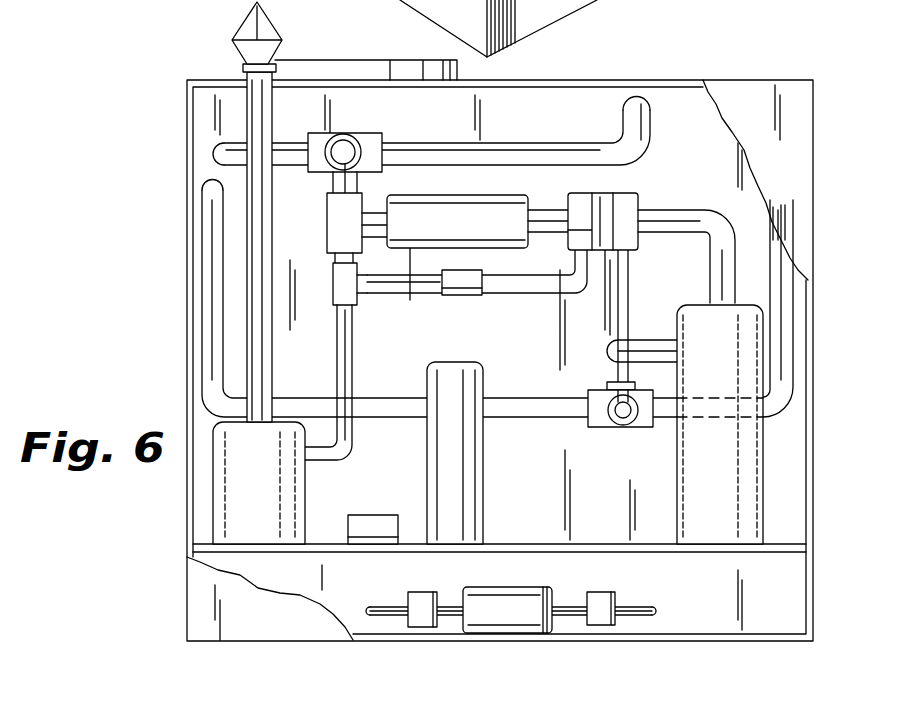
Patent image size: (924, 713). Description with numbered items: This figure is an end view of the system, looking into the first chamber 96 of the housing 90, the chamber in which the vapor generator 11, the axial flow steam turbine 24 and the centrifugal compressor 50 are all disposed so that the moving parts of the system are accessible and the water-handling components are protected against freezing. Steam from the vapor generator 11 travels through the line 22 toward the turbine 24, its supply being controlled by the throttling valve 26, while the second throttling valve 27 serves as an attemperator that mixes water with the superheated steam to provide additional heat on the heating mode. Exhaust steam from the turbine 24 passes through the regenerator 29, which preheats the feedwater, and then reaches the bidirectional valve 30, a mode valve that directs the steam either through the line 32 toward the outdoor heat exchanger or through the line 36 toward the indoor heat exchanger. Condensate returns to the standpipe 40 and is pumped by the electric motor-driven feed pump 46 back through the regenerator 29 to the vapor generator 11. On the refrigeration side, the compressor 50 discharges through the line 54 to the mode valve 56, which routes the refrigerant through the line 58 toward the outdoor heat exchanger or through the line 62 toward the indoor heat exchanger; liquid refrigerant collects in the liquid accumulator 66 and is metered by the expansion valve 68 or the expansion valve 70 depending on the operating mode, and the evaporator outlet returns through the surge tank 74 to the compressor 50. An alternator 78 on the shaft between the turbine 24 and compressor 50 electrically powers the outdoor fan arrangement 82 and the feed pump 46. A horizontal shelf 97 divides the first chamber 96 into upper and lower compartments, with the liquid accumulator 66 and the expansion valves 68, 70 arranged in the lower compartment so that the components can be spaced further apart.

The vapor generator 11 is at (270, 495).
The line 22 is at (345, 343).
The axial flow steam turbine 24 is at (580, 205).
The throttling valve 26 is at (465, 292).
The second throttling valve 27 is at (330, 230).
The regenerator 29 is at (463, 205).
The bidirectional valve 30 is at (370, 143).
The line 32 is at (285, 148).
The line 36 is at (545, 146).
The standpipe 40 is at (480, 470).
The feed pump 46 is at (366, 528).
The centrifugal compressor 50 is at (636, 206).
The line 54 is at (630, 302).
The mode valve 56 is at (600, 430).
The line 58 is at (206, 312).
The line 62 is at (783, 303).
The liquid accumulator 66 is at (527, 597).
The expansion valve 68 is at (600, 603).
The expansion valve 70 is at (420, 602).
The surge tank 74 is at (735, 482).
The alternator 78 is at (603, 202).
The outdoor electric motor driven fan arrangement 82 is at (345, 68).
The housing 90 is at (813, 140).
The first chamber 96 is at (672, 105).
The horizontal shelf 97 is at (592, 545).